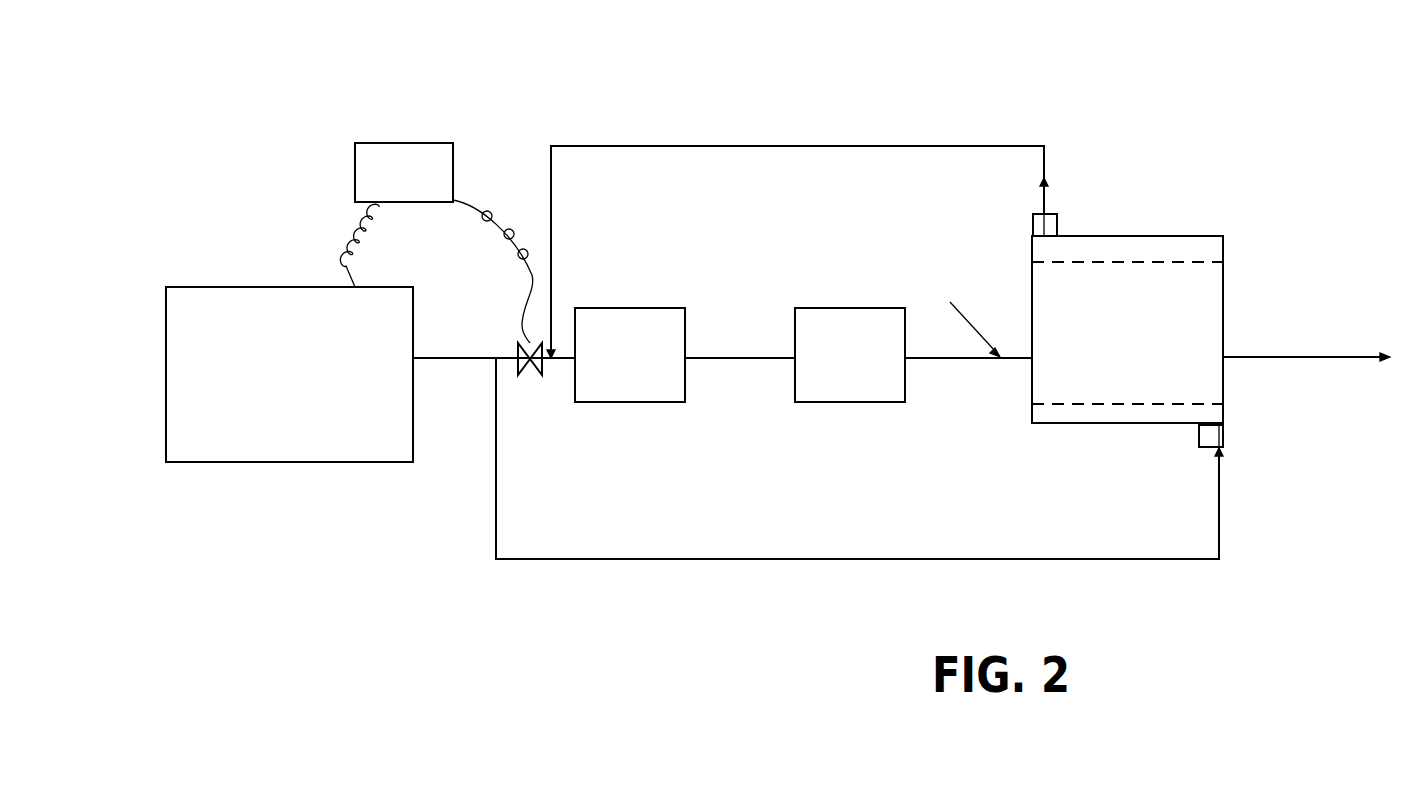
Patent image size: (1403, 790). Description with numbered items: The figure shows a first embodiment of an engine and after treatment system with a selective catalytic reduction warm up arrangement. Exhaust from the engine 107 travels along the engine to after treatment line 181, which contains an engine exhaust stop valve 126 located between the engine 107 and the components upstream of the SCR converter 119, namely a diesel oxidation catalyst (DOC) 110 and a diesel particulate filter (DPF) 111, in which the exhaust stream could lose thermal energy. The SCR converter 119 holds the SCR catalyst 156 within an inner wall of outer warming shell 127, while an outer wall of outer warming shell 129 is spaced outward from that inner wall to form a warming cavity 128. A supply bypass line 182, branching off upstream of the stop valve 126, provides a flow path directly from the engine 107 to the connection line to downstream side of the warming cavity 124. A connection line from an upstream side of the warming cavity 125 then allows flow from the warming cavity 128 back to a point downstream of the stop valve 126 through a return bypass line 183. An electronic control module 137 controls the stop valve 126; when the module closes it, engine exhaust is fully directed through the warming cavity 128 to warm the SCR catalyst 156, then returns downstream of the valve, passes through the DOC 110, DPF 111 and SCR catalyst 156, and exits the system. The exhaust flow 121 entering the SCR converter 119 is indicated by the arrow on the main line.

The engine 107 is at (227, 287).
The electronic control module 137 is at (440, 143).
The diesel oxidation catalyst (DOC) 110 is at (665, 308).
The diesel particulate filter (DPF) 111 is at (887, 308).
The engine exhaust stop valve 126 is at (530, 375).
The engine to after treatment line 181 is at (452, 360).
The supply bypass line 182 is at (788, 559).
The return bypass line 183 is at (802, 146).
The exhaust gas flow 121 is at (982, 305).
The SCR converter 119 is at (1141, 331).
The SCR catalyst 156 is at (1127, 329).
The connection line from upstream side of the warming cavity 125 is at (1032, 222).
The connection line to downstream side of the warming cavity 124 is at (1223, 435).
The inner wall of outer warming shell 127 is at (1120, 262).
The warming cavity 128 is at (1108, 247).
The outer wall of outer warming shell 129 is at (1095, 236).